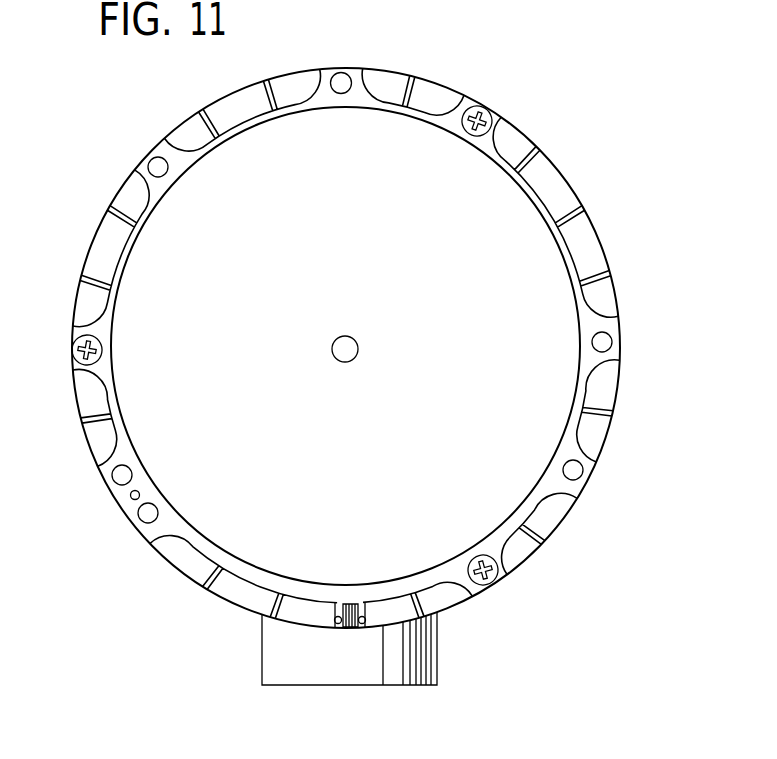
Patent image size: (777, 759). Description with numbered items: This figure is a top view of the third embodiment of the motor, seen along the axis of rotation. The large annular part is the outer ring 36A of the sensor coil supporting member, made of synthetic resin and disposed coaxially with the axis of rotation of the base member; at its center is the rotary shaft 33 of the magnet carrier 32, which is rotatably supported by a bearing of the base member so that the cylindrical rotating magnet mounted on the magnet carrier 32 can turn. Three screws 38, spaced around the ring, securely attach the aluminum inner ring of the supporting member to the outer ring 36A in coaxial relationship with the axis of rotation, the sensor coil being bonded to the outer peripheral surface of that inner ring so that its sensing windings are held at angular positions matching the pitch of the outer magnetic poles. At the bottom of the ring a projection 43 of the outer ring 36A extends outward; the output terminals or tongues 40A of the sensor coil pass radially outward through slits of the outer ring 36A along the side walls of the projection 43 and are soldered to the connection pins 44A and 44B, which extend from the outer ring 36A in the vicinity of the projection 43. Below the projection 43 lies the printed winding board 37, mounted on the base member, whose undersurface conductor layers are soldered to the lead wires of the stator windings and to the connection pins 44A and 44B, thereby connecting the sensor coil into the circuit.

The magnet carrier 32 is at (518, 218).
The rotary shaft 33 is at (359, 349).
The outer ring 36A is at (606, 387).
The printed winding board 37 is at (432, 631).
The screws 38 is at (478, 106).
The output terminals or tongues 40A is at (331, 628).
The projection 43 is at (349, 628).
The connection pin 44A is at (336, 606).
The connection pin 44B is at (364, 606).